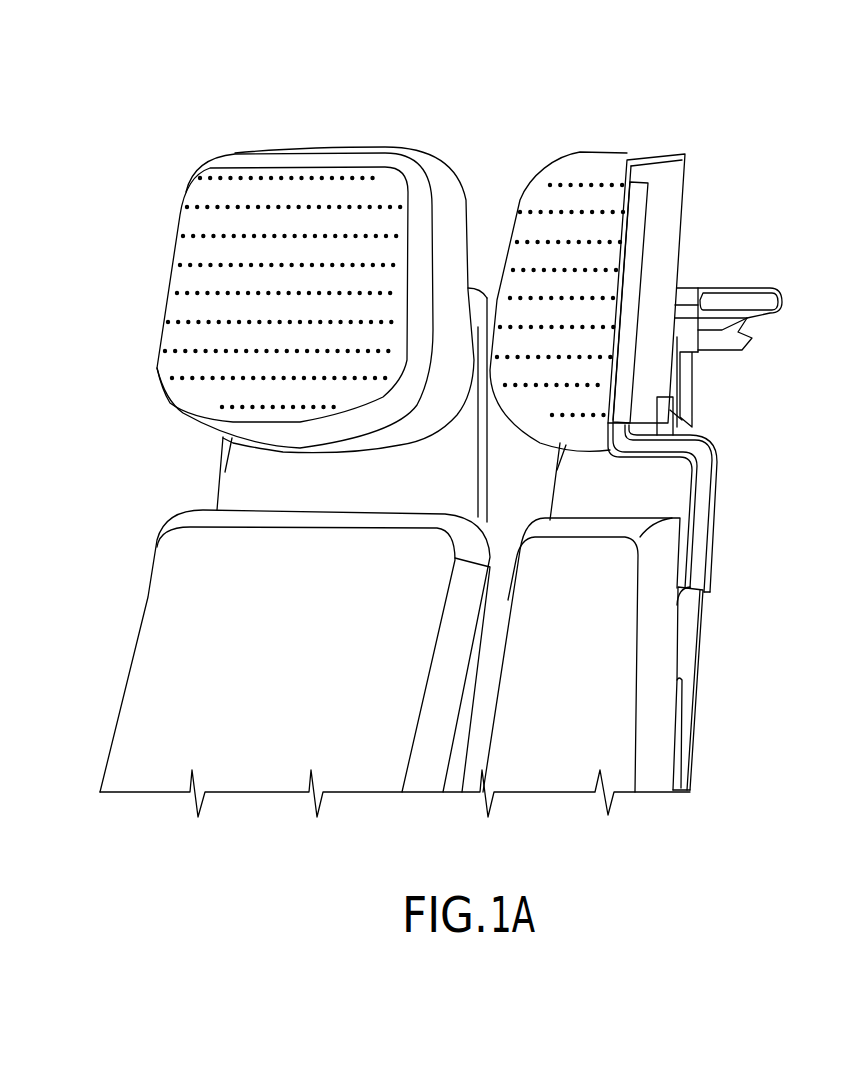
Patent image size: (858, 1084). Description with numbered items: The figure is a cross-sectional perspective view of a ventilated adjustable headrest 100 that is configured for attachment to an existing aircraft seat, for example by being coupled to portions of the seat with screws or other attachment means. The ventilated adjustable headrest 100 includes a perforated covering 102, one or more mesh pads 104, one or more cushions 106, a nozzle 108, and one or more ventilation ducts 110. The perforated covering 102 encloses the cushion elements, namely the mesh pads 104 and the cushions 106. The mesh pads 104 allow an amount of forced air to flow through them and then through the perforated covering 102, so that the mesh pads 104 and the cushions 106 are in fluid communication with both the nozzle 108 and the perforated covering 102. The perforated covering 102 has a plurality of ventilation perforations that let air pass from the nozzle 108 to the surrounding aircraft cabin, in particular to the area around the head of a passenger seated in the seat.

The ventilated adjustable headrest 100 is at (764, 110).
The perforated covering 102 is at (185, 277).
The mesh pad 104 is at (628, 257).
The cushion 106 is at (672, 195).
The nozzle 108 is at (705, 513).
The ventilation duct 110 is at (687, 657).